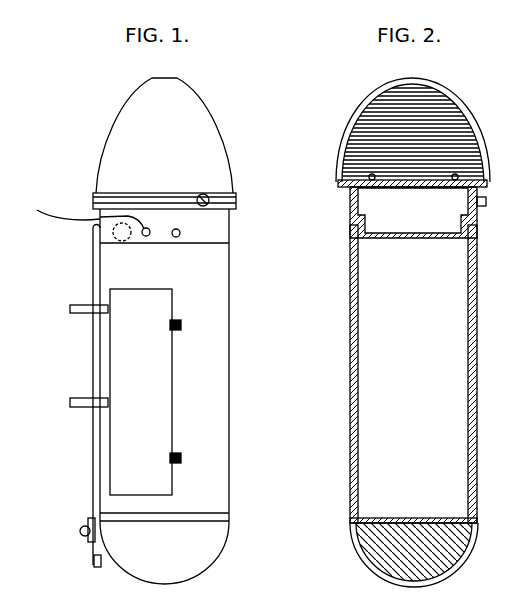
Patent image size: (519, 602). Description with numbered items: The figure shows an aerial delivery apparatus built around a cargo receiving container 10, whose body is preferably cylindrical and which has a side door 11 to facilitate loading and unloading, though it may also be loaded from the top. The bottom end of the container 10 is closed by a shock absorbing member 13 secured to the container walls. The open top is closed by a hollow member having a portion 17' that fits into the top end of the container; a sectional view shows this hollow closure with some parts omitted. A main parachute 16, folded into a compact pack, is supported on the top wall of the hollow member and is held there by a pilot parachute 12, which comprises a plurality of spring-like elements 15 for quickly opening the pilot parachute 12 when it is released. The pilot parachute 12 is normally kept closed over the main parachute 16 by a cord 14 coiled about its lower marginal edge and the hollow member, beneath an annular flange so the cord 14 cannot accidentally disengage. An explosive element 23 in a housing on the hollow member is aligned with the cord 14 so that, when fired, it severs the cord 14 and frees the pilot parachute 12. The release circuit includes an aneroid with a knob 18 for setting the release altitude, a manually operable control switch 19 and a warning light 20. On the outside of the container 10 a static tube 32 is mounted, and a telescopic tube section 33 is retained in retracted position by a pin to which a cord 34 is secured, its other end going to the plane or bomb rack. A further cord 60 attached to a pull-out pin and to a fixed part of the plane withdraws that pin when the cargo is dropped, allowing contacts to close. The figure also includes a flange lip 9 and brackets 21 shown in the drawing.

In FIG. 2, the flange lip 9 is at (412, 196).
In FIG. 1, the cargo receiving container 10 is at (218, 481).
In FIG. 2, the cargo receiving container 10 is at (350, 364).
In FIG. 1, the side door 11 is at (172, 397).
In FIG. 1, the pilot parachute 12 is at (220, 133).
In FIG. 2, the pilot parachute 12 is at (352, 112).
In FIG. 1, the shock absorbing member 13 is at (215, 560).
In FIG. 2, the shock absorbing member 13 is at (364, 555).
In FIG. 1, the cord 14 is at (236, 198).
In FIG. 2, the cord 14 is at (486, 201).
In FIG. 2, the spring-like elements 15 is at (340, 145).
In FIG. 2, the main parachute 16 is at (492, 150).
In FIG. 2, the portion of hollow member 17' is at (413, 212).
In FIG. 1, the knob 18 is at (113, 235).
In FIG. 1, the manually operable control switch 19 is at (143, 236).
In FIG. 1, the warning light 20 is at (181, 233).
In FIG. 1, the brackets 21 is at (70, 309).
In FIG. 1, the explosive element 23 is at (207, 190).
In FIG. 1, the static tube 32 is at (93, 441).
In FIG. 1, the telescopic tube section 33 is at (94, 561).
In FIG. 1, the cord 34 is at (83, 529).
In FIG. 1, the cord 60 is at (55, 213).